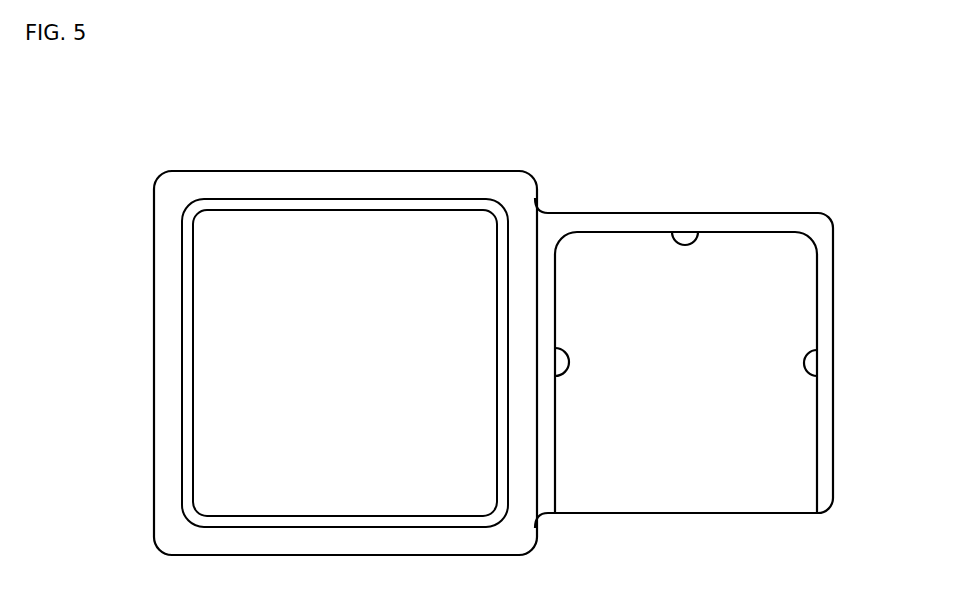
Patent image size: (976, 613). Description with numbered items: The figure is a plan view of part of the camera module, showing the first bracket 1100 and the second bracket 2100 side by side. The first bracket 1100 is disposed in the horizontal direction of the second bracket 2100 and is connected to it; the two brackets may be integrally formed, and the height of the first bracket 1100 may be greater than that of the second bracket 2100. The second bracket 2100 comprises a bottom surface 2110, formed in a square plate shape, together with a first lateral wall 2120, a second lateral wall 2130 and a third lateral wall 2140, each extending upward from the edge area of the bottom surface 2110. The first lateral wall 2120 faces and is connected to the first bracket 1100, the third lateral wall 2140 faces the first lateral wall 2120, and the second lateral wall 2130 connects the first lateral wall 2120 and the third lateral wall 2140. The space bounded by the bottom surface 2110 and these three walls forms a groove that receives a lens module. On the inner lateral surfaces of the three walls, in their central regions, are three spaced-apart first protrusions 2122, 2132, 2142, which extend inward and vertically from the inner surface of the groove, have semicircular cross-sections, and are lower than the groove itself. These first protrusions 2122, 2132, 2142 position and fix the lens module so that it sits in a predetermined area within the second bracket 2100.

The first bracket 1100 is at (262, 161).
The second bracket 2100 is at (743, 351).
The bottom surface 2110 is at (687, 493).
The first lateral wall 2120 is at (548, 450).
The first protrusion 2122 is at (564, 348).
The second lateral wall 2130 is at (643, 222).
The first protrusion 2132 is at (685, 240).
The third lateral wall 2140 is at (827, 295).
The first protrusion 2142 is at (810, 363).